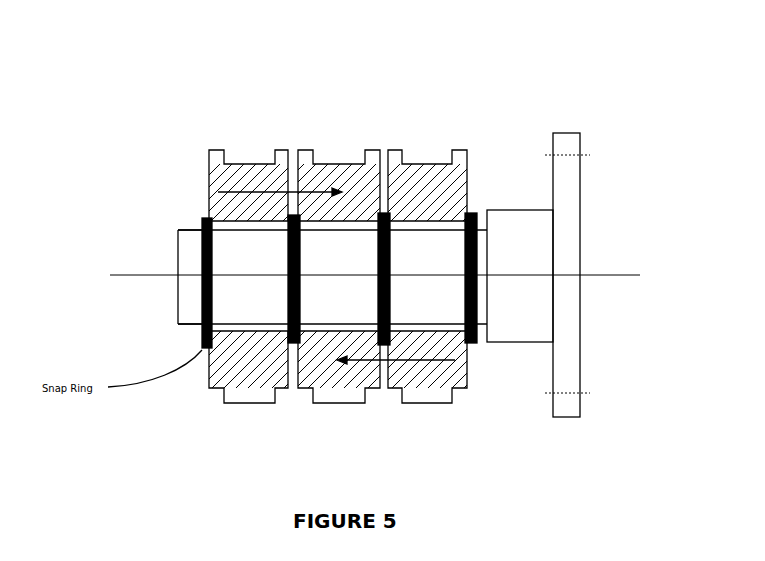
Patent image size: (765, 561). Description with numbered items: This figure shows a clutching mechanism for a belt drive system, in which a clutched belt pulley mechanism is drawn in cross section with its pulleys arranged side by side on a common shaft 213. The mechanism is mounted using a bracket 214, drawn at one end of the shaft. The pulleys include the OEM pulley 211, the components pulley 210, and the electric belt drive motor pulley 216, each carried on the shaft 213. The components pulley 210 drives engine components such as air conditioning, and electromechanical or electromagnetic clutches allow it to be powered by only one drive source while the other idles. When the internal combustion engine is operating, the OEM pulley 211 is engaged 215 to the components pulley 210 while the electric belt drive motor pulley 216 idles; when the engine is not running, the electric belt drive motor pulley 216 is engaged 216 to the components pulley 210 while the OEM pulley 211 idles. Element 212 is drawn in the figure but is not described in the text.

The components pulley 210 is at (338, 164).
The OEM pulley 211 is at (425, 164).
The first hub body 212 is at (247, 164).
The common shaft 213 is at (177, 243).
The bracket 214 is at (567, 133).
The engagement of OEM pulley to components pulley 215 is at (408, 360).
The electric belt drive motor pulley 216 is at (262, 192).